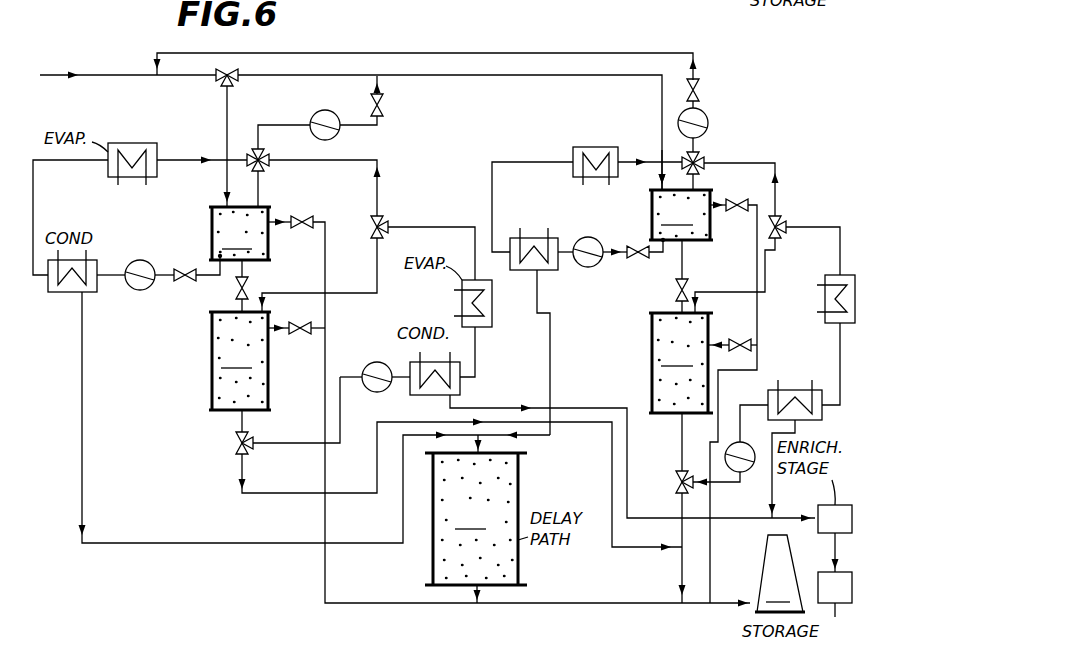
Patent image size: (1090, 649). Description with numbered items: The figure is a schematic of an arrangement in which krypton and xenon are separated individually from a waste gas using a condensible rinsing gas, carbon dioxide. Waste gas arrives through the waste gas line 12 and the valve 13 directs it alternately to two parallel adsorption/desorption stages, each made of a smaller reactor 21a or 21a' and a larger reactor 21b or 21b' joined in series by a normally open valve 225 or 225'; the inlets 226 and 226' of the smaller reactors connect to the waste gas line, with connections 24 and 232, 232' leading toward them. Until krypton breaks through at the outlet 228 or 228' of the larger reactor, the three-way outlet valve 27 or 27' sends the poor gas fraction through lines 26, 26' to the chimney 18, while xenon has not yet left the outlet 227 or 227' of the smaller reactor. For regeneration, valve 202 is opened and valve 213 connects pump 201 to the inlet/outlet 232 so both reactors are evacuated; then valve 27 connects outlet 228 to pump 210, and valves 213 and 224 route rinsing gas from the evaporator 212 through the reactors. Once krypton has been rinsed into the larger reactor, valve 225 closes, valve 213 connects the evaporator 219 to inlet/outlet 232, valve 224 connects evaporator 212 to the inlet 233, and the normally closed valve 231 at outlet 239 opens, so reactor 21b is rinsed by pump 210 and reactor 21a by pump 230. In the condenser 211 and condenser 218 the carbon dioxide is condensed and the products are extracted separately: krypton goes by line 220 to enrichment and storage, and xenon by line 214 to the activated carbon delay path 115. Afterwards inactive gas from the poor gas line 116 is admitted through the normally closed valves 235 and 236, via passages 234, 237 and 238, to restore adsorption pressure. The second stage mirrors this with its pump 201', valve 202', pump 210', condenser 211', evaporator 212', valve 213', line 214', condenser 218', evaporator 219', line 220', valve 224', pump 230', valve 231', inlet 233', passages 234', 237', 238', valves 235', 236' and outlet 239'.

The waste gas line 12 is at (101, 74).
The valve 13 is at (219, 84).
The conduit 24 is at (226, 133).
The conduit 26 is at (461, 485).
The valve 27 is at (226, 443).
The chimney 18 is at (780, 573).
The activated carbon delay path 115 is at (476, 519).
The poor gas line 116 is at (485, 590).
The pump 201 is at (321, 112).
The valve 202 is at (400, 105).
The pump 210 is at (371, 362).
The condenser 211 is at (426, 385).
The evaporator 212 is at (448, 303).
The valve 213 is at (281, 153).
The line 214 is at (315, 417).
The condenser 218 is at (67, 283).
The evaporator 219 is at (132, 150).
The line 220 is at (632, 457).
The adsorption/desorption reactor 21a is at (240, 233).
The adsorption/desorption reactor 21b is at (240, 361).
The valve 224 is at (395, 220).
The normally open valve 225 is at (216, 292).
The inlet 226 is at (280, 247).
The outlet 227 is at (263, 273).
The outlet 228 is at (264, 421).
The pump 230 is at (136, 261).
The normally closed valve 231 is at (162, 293).
The inlet/outlet 232 is at (276, 189).
The inlet 233 is at (281, 305).
The column section 234 is at (185, 229).
The normally closed valve 235 is at (298, 233).
The normally closed valve 236 is at (299, 342).
The conduit 237 is at (328, 247).
The conduit 238 is at (537, 453).
The outlet 239 is at (194, 257).
The pump 201' is at (712, 118).
The valve 202' is at (715, 84).
The pump 210' is at (743, 476).
The condenser 211' is at (774, 397).
The evaporator 212' is at (816, 299).
The four-way valve 213' is at (714, 152).
The conduit 214' is at (564, 352).
The condenser 218' is at (528, 263).
The evaporator 219' is at (594, 151).
The conduit 220' is at (792, 469).
The adsorption/desorption reactor 21a' is at (681, 215).
The adsorption/desorption reactor 21b' is at (681, 363).
The three-way valve 224' is at (796, 215).
The normally open valve 225' is at (705, 287).
The inlet 226' is at (716, 217).
The conduit 227' is at (655, 266).
The outlet 228' is at (660, 442).
The pump 230' is at (570, 236).
The valve 231' is at (616, 273).
The conduit 232' is at (714, 183).
The conduit inlet 233' is at (722, 302).
The column section 234' is at (625, 215).
The valve 235' is at (733, 216).
The valve 236' is at (767, 345).
The conduit 237' is at (785, 232).
The conduit 238' is at (759, 451).
The conduit 239' is at (631, 237).
The conduit 26' is at (662, 546).
The three-way outlet valve 27' is at (671, 474).